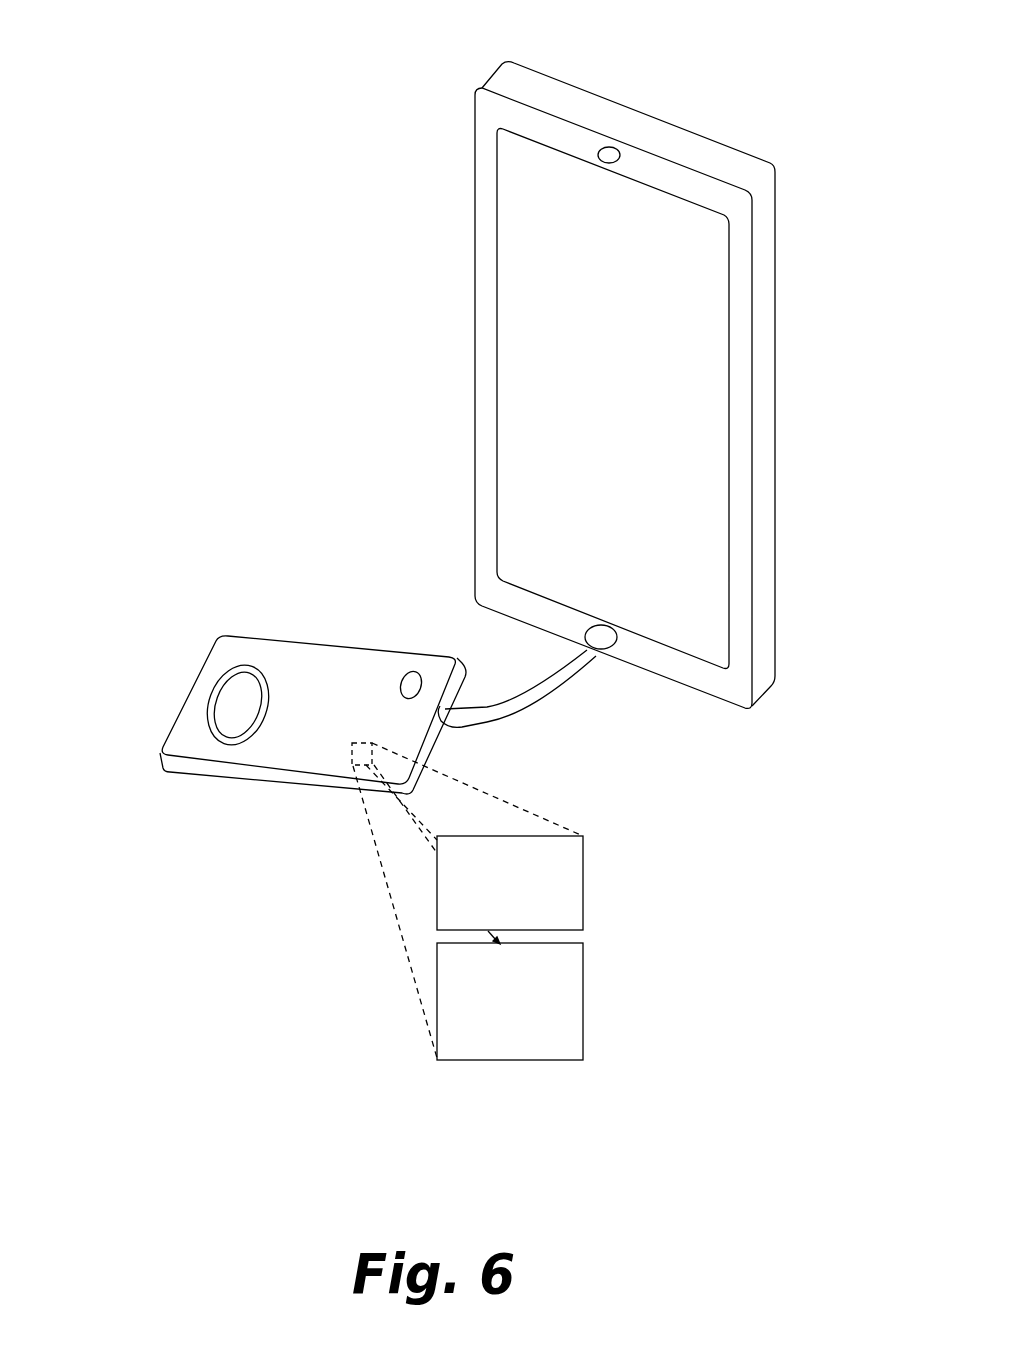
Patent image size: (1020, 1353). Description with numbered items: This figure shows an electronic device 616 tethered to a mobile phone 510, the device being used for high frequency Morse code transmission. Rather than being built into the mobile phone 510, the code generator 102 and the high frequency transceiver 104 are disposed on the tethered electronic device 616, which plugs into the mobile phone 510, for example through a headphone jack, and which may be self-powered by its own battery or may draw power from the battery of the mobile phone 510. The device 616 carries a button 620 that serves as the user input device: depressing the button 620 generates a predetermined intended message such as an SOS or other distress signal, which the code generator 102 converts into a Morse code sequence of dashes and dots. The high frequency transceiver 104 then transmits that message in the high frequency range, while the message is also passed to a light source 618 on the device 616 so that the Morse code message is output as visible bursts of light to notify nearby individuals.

The mobile phone 510 is at (448, 80).
The tethered electronic device 616 is at (338, 800).
The light source 618 is at (252, 700).
The button 620 is at (409, 633).
The code generator 102 is at (491, 922).
The high frequency transceiver 104 is at (491, 1056).